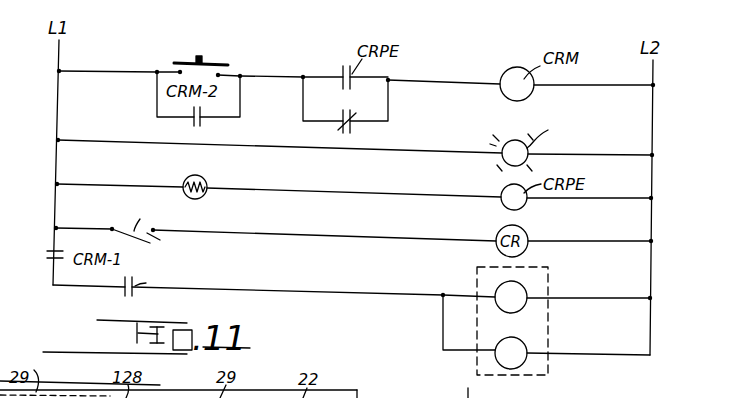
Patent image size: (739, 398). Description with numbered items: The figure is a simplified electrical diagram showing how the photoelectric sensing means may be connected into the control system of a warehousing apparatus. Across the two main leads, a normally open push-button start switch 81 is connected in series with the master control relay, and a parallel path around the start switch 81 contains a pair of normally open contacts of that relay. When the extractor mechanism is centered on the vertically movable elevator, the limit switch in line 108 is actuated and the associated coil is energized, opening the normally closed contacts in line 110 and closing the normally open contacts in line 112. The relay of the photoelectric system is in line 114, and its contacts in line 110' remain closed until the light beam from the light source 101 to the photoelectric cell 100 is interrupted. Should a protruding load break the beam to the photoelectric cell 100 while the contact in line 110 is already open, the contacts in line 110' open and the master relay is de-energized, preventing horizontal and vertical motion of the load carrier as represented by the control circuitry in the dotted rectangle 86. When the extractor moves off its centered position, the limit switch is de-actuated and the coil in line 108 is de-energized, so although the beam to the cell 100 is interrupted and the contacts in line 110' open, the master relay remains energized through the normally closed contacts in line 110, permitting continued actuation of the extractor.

The start switch 81 is at (207, 63).
The line 110' is at (444, 62).
The line 110 is at (372, 120).
The light source 101 is at (498, 143).
The line 114 is at (383, 192).
The photoelectric cell 100 is at (205, 195).
The line 108 is at (371, 236).
The line 112 is at (270, 291).
The control circuitry 86 is at (548, 297).